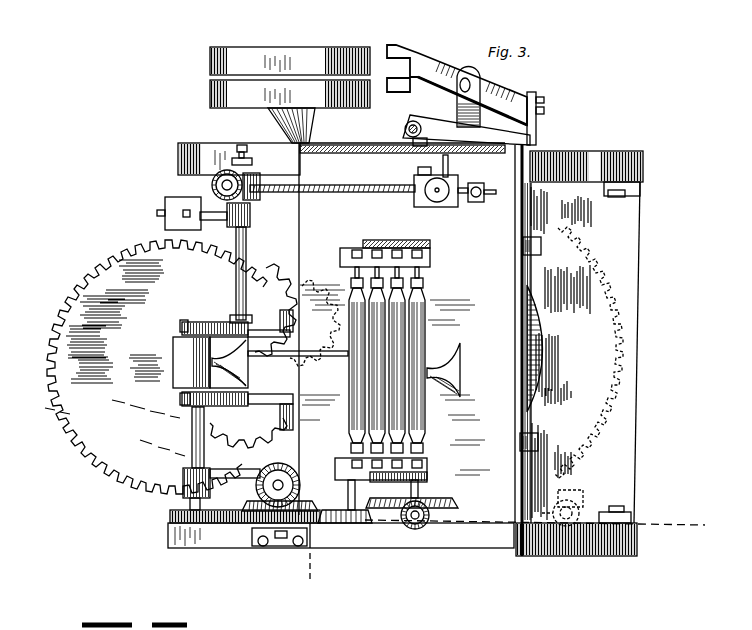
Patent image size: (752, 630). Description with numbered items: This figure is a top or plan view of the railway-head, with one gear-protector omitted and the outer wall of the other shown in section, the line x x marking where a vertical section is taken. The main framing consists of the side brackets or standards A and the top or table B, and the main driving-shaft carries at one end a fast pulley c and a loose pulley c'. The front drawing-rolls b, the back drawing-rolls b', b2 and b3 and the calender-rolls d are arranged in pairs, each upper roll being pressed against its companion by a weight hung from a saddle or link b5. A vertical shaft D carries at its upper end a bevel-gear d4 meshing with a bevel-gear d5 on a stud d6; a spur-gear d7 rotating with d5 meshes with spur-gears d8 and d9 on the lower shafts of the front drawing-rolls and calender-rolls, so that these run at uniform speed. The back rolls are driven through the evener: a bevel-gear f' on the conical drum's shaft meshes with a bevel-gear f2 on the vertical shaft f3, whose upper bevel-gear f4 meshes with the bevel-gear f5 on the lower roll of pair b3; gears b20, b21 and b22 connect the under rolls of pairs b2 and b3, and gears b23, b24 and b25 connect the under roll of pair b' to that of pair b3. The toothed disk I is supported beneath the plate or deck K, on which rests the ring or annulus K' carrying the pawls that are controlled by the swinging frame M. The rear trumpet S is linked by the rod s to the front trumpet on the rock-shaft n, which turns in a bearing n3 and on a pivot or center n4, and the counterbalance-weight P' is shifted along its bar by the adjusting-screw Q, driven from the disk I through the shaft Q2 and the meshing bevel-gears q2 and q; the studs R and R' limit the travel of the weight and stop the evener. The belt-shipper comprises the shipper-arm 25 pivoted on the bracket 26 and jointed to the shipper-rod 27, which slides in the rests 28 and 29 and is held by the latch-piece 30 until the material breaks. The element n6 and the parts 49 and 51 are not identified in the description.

The fast pulley c is at (290, 46).
The loose pulley c' is at (274, 108).
The side brackets or standards A is at (588, 151).
The stud R' is at (402, 159).
The spur-gear d9 is at (170, 517).
The spur-gear d8 is at (365, 523).
The stud d6 is at (280, 546).
The spur-gear d7 is at (318, 526).
The connecting-rod s is at (315, 325).
The pivot or center n4 is at (252, 161).
The bevel-gear q2 is at (212, 185).
The shaft Q2 is at (222, 180).
The bevel-gear q is at (250, 200).
The guide box n6 is at (165, 216).
The shaft n is at (247, 247).
The bearing n3 is at (234, 317).
The adjusting-screw Q is at (362, 185).
The stud R is at (461, 166).
The counterbalance-weight P' is at (455, 200).
The frame M is at (215, 358).
The calender-rolls d is at (180, 345).
The vertical shaft D is at (298, 486).
The bevel-gear d4 is at (280, 463).
The bevel-gear d5 is at (255, 501).
The top or table B is at (365, 228).
The gear b25 is at (440, 244).
The gear b24 is at (377, 248).
The gear b23 is at (397, 248).
The saddle or link b5 is at (349, 284).
The front drawing-rolls b is at (345, 365).
The back drawing-rolls b' is at (348, 365).
The back drawing-rolls b2 is at (405, 403).
The back drawing-rolls b3 is at (425, 425).
The gear b22 is at (427, 479).
The gear b20 is at (392, 481).
The gear b21 is at (351, 482).
The trumpet S is at (461, 372).
The bevel-gear f5 is at (455, 500).
The vertical shaft f3 is at (413, 530).
The bevel-gear f4 is at (430, 520).
The section line x is at (510, 558).
The shipper-arm 25 is at (442, 70).
The stand or bracket 26 is at (457, 105).
The shipper-rod 27 is at (537, 128).
The lever 51 is at (466, 130).
The pivot 49 is at (408, 123).
The plate or deck K is at (589, 352).
The disk I is at (637, 338).
The ring or annulus K' is at (550, 348).
The latch-piece 30 is at (532, 470).
The rest 29 is at (545, 246).
The rest 28 is at (543, 442).
The bevel-gear f' is at (586, 487).
The bevel-gear f2 is at (583, 522).